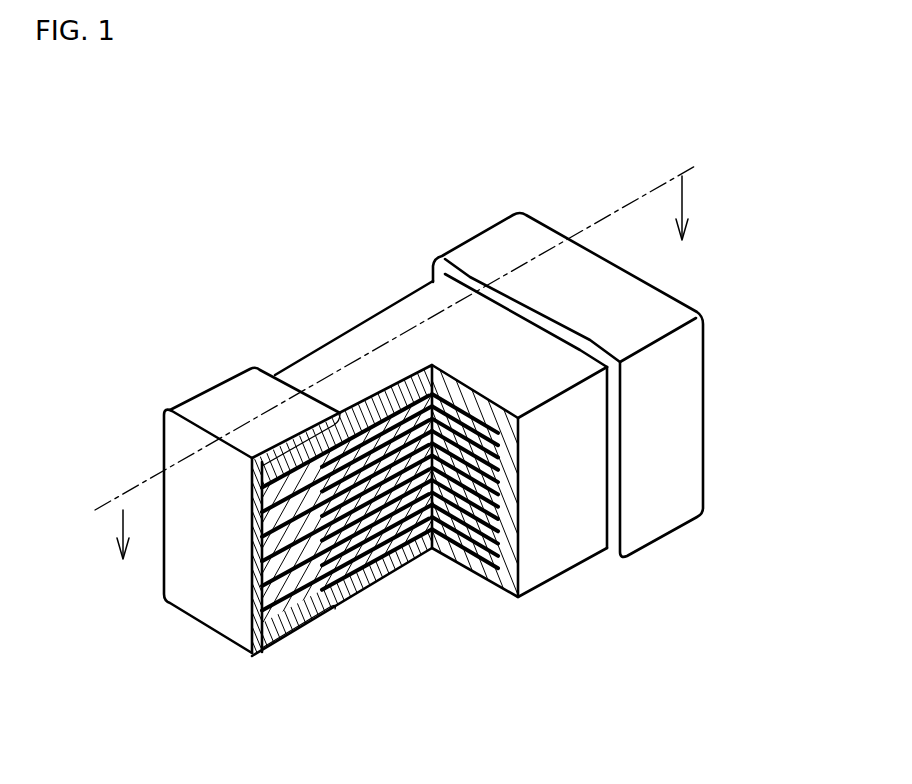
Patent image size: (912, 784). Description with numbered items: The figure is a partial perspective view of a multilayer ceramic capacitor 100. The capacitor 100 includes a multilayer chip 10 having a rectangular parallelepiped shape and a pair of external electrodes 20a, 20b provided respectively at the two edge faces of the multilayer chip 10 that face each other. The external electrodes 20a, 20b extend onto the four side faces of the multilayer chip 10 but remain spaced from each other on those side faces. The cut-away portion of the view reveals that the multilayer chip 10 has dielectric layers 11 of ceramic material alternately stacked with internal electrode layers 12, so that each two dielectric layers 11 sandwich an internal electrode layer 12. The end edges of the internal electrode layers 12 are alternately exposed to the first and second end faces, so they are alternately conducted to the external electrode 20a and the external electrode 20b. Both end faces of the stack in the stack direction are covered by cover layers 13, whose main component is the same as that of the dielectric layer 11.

The multilayer ceramic capacitor 100 is at (793, 153).
The multilayer chip 10 is at (307, 356).
The dielectric layer 11 is at (362, 557).
The internal electrode layer 12 is at (391, 534).
The cover layer 13 is at (403, 313).
The external electrode 20a is at (218, 384).
The external electrode 20b is at (483, 250).